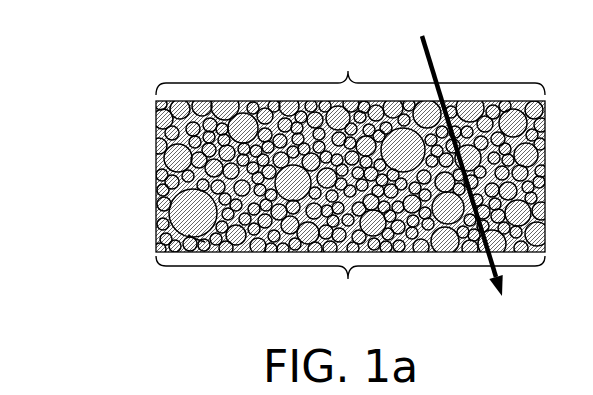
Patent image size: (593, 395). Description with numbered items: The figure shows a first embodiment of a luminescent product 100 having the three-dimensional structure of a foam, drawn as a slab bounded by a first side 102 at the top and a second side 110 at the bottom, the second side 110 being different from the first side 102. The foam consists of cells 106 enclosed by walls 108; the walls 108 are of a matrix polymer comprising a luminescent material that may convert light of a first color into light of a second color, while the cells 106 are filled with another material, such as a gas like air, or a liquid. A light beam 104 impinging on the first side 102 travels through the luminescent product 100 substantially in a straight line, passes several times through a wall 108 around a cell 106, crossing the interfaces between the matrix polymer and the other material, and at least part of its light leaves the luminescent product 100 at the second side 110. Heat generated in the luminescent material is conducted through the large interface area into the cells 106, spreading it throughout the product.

The luminescent product 100 is at (97, 59).
The first side 102 is at (350, 70).
The light beam 104 is at (424, 46).
The cell 106 is at (168, 206).
The wall 108 is at (192, 229).
The second side 110 is at (350, 285).